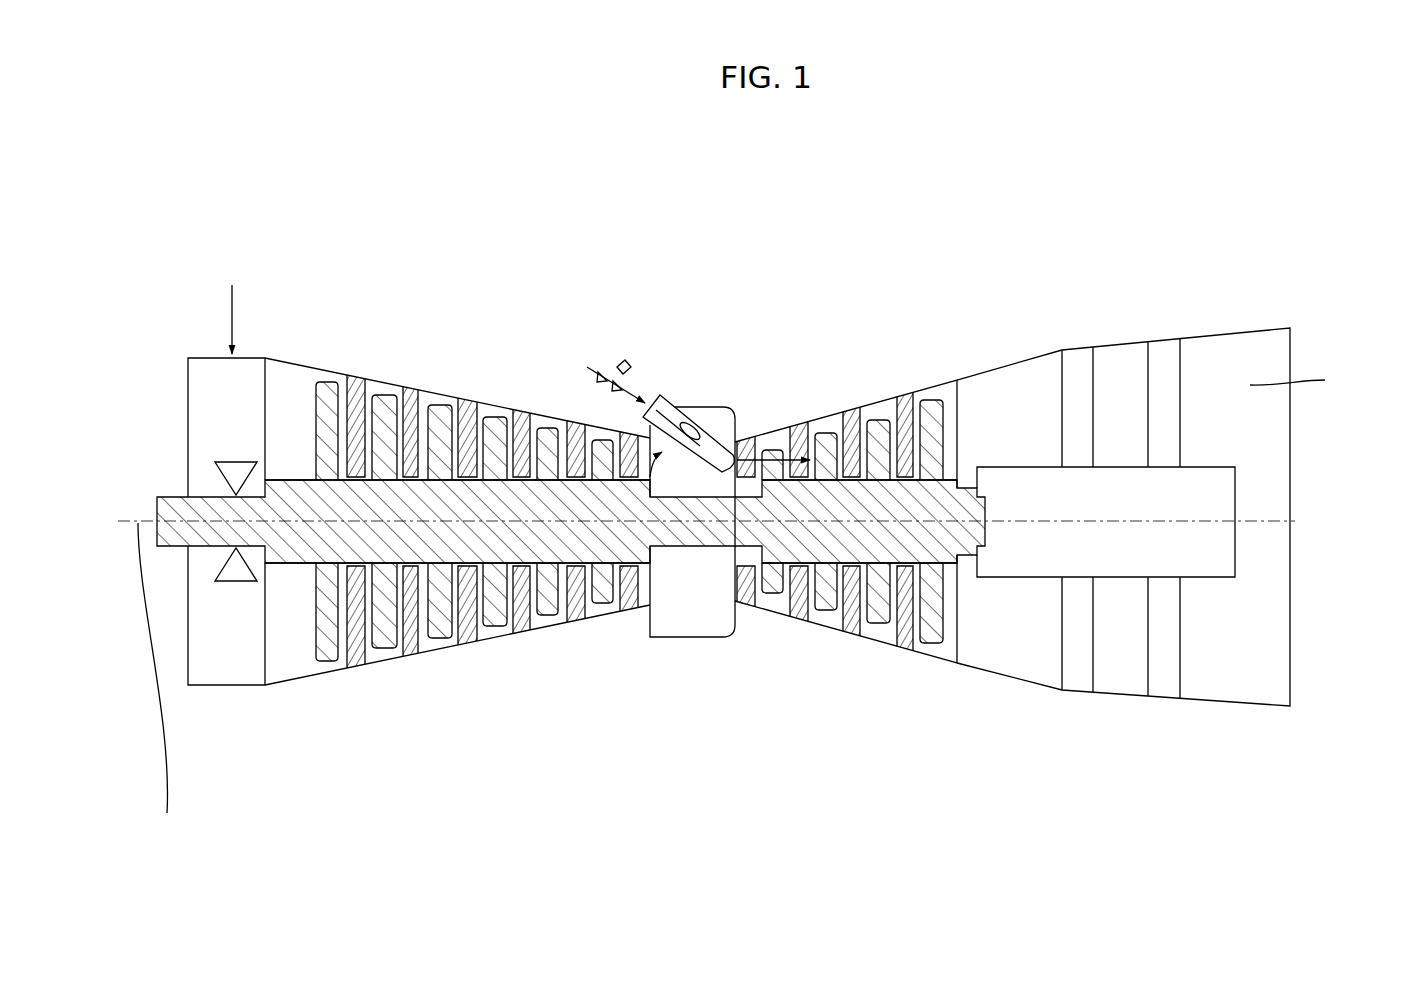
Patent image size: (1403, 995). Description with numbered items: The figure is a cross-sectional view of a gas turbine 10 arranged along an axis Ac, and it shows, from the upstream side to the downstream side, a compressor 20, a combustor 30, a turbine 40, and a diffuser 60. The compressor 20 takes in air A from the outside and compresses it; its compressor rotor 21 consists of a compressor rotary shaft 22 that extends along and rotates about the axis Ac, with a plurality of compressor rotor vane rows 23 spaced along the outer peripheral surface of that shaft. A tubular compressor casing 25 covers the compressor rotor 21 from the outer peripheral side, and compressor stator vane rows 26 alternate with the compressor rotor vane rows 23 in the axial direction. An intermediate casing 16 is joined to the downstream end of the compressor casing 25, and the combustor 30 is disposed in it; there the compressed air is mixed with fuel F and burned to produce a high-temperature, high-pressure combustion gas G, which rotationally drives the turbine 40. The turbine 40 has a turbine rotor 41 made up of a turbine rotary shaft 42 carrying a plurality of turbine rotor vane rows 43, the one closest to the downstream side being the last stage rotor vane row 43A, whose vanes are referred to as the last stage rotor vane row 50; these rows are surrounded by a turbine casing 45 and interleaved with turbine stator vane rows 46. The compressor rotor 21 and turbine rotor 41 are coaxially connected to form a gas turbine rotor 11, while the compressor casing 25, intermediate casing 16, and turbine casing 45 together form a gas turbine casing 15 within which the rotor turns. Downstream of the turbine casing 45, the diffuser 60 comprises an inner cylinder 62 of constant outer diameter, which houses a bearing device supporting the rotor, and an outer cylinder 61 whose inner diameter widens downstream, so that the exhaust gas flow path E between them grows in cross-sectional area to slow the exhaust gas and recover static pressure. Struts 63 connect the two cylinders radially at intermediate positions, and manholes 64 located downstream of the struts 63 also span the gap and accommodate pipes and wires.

The gas turbine 10 is at (975, 352).
The gas turbine rotor 11 is at (655, 547).
The gas turbine casing 15 is at (688, 640).
The intermediate casing 16 is at (700, 406).
The compressor 20 is at (325, 692).
The compressor rotor 21 is at (503, 742).
The compressor rotary shaft 22 is at (433, 537).
The compressor rotor vane rows 23 is at (383, 652).
The compressor casing 25 is at (320, 368).
The compressor stator vane rows 26 is at (412, 387).
The combustor 30 is at (679, 392).
The turbine 40 is at (949, 681).
The turbine rotor 41 is at (947, 742).
The turbine rotary shaft 42 is at (925, 547).
The turbine rotor vane rows 43 is at (868, 632).
The last stage rotor vane row 43A is at (927, 633).
The turbine casing 45 is at (822, 414).
The turbine stator vane rows 46 is at (848, 409).
The last stage rotor vane row 50 is at (928, 410).
The diffuser 60 is at (1190, 299).
The outer cylinder 61 is at (1137, 343).
The inner cylinder 62 is at (1210, 468).
The struts 63 is at (1082, 688).
The manholes 64 is at (1162, 694).
The air A is at (231, 306).
The axis Ac is at (157, 685).
The fuel F is at (608, 377).
The combustion gas G is at (776, 455).
The exhaust gas flow path E is at (1296, 380).